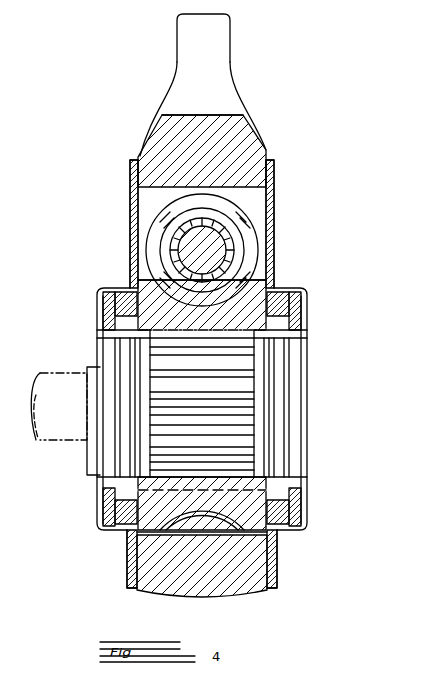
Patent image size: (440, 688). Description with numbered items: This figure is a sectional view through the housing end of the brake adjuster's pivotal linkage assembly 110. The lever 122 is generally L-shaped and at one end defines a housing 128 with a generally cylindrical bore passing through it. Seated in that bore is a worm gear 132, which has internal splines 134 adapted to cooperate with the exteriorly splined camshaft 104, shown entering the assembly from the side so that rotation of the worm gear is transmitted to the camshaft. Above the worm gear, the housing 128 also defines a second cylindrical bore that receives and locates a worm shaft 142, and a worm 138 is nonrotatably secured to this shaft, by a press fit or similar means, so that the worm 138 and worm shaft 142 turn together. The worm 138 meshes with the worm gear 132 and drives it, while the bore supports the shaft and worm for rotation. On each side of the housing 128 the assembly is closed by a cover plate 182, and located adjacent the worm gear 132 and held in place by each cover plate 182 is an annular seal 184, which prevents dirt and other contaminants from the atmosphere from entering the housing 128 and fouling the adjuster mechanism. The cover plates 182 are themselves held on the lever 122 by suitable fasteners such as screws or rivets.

The camshaft 104 is at (65, 430).
The pivotal linkage assembly 110 is at (245, 85).
The lever 122 is at (217, 35).
The housing 128 is at (264, 139).
The worm gear 132 is at (272, 287).
The internal splines 134 is at (250, 384).
The worm 138 is at (247, 220).
The worm shaft 142 is at (220, 247).
The cover plate 182 is at (95, 300).
The annular seal 184 is at (123, 290).